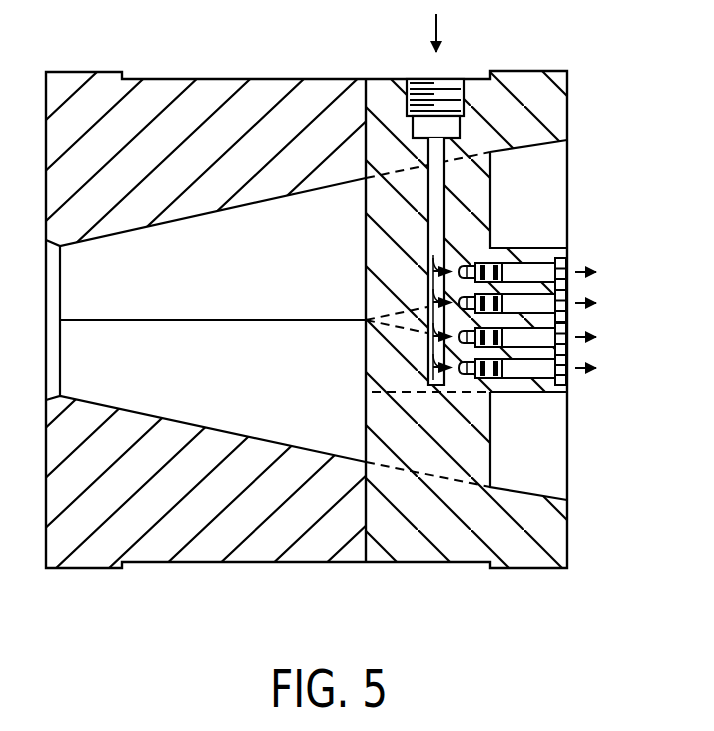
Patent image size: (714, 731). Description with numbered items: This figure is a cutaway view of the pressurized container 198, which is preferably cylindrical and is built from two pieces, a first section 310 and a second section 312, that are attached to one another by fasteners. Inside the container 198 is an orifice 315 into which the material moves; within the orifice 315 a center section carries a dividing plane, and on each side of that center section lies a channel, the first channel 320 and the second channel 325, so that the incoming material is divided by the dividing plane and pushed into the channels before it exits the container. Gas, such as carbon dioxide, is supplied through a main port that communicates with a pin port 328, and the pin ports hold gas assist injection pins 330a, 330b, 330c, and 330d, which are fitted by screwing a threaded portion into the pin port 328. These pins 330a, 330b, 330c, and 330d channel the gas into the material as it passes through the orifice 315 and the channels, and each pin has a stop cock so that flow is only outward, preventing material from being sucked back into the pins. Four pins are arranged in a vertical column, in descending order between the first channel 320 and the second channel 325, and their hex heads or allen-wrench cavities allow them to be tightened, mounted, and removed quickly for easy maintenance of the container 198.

The pressurized container 198 is at (220, 593).
The first section 310 is at (525, 70).
The second section 312 is at (163, 78).
The orifice 315 is at (286, 279).
The first channel 320 is at (548, 168).
The second channel 325 is at (548, 463).
The pin port 328 is at (420, 100).
The injection pin 330a is at (548, 258).
The injection pin 330b is at (556, 297).
The injection pin 330c is at (556, 343).
The injection pin 330d is at (557, 393).